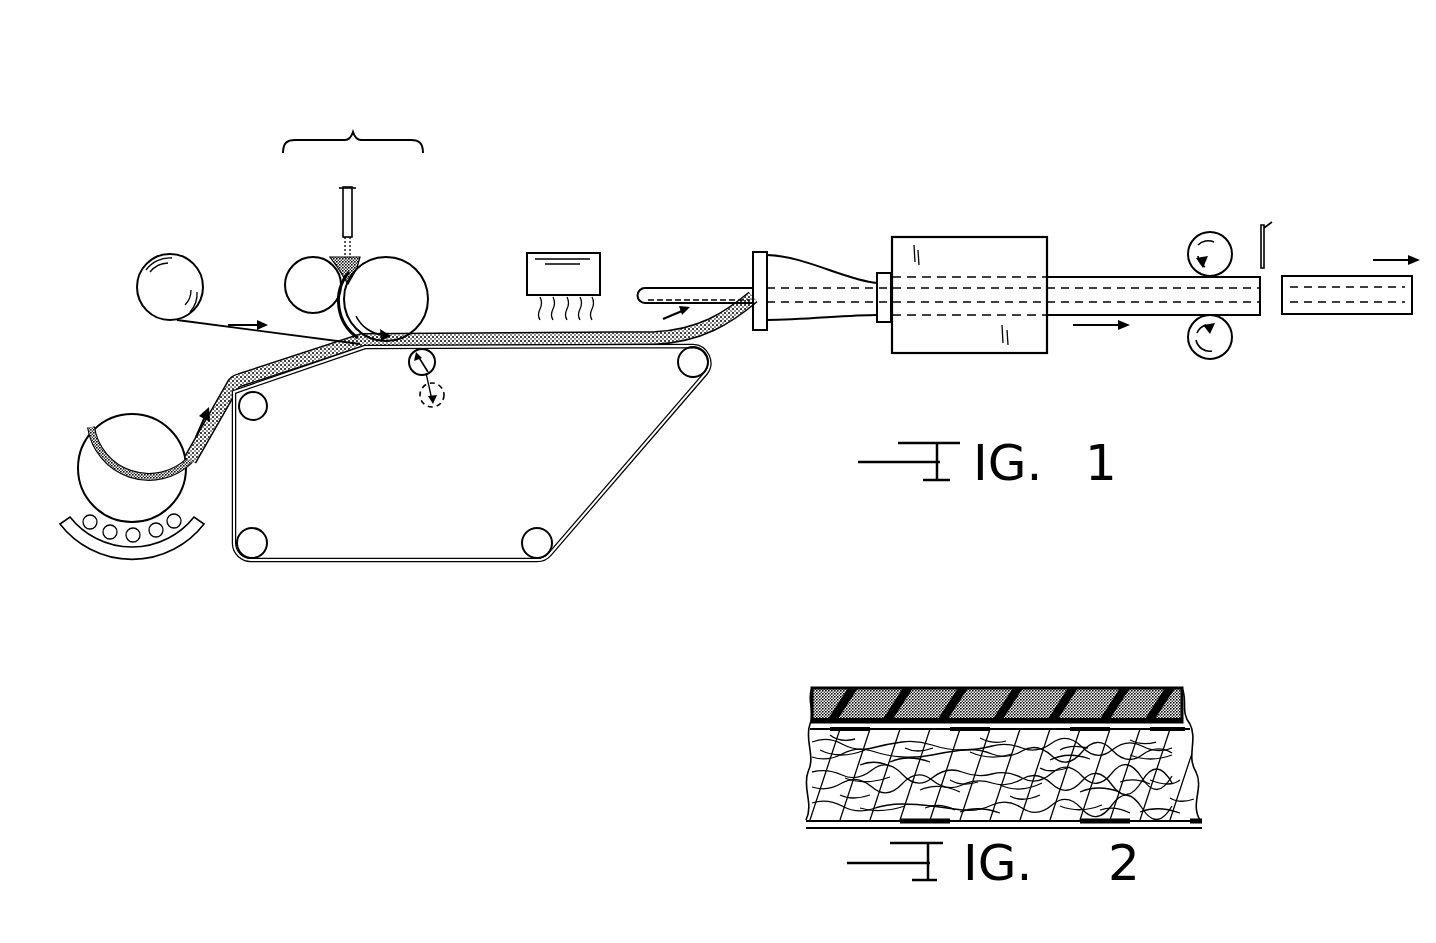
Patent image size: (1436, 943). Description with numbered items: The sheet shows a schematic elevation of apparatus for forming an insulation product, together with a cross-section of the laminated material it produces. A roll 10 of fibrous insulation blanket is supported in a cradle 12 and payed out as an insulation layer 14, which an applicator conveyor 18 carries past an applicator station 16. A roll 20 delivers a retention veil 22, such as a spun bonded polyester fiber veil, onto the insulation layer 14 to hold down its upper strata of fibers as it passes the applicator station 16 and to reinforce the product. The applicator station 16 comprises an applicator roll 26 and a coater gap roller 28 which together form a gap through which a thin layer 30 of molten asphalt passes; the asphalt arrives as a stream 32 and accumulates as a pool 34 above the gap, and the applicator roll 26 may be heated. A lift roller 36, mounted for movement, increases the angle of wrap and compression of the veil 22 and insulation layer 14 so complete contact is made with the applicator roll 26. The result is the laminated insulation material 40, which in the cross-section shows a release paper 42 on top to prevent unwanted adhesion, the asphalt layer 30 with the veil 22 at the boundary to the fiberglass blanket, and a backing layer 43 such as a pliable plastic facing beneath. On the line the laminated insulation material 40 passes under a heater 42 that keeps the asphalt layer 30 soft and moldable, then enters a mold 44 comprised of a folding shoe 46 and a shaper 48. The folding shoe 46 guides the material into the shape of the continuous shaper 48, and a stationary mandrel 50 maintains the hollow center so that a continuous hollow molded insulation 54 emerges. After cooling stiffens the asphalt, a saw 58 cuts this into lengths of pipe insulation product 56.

In FIG. 1, the roll 10 is at (104, 423).
In FIG. 1, the cradle 12 is at (133, 560).
In FIG. 1, the insulation layer 14 is at (233, 381).
In FIG. 2, the insulation layer 14 is at (1187, 793).
In FIG. 1, the applicator station 16 is at (330, 216).
In FIG. 1, the applicator conveyor 18 is at (327, 563).
In FIG. 1, the roll 20 is at (168, 253).
In FIG. 1, the retention veil 22 is at (197, 333).
In FIG. 2, the retention veil 22 is at (1187, 723).
In FIG. 1, the applicator roll 26 is at (398, 238).
In FIG. 1, the coater gap roller 28 is at (292, 265).
In FIG. 1, the asphalt layer 30 is at (338, 320).
In FIG. 2, the asphalt layer 30 is at (1185, 700).
In FIG. 1, the stream 32 is at (353, 206).
In FIG. 1, the pool 34 is at (338, 258).
In FIG. 1, the lift roller 36 is at (404, 374).
In FIG. 1, the laminated insulation material 40 is at (482, 352).
In FIG. 2, the laminated insulation material 40 is at (1004, 749).
In FIG. 1, the heater 42 is at (557, 253).
In FIG. 2, the heater 42 is at (1017, 688).
In FIG. 2, the backing layer 43 is at (818, 827).
In FIG. 1, the mold 44 is at (866, 353).
In FIG. 1, the folding shoe 46 is at (815, 257).
In FIG. 1, the shaper 48 is at (988, 353).
In FIG. 1, the stationary mandrel 50 is at (677, 285).
In FIG. 1, the continuous hollow molded insulation 54 is at (1153, 315).
In FIG. 1, the pipe insulation product 56 is at (1337, 315).
In FIG. 1, the saw 58 is at (1267, 240).